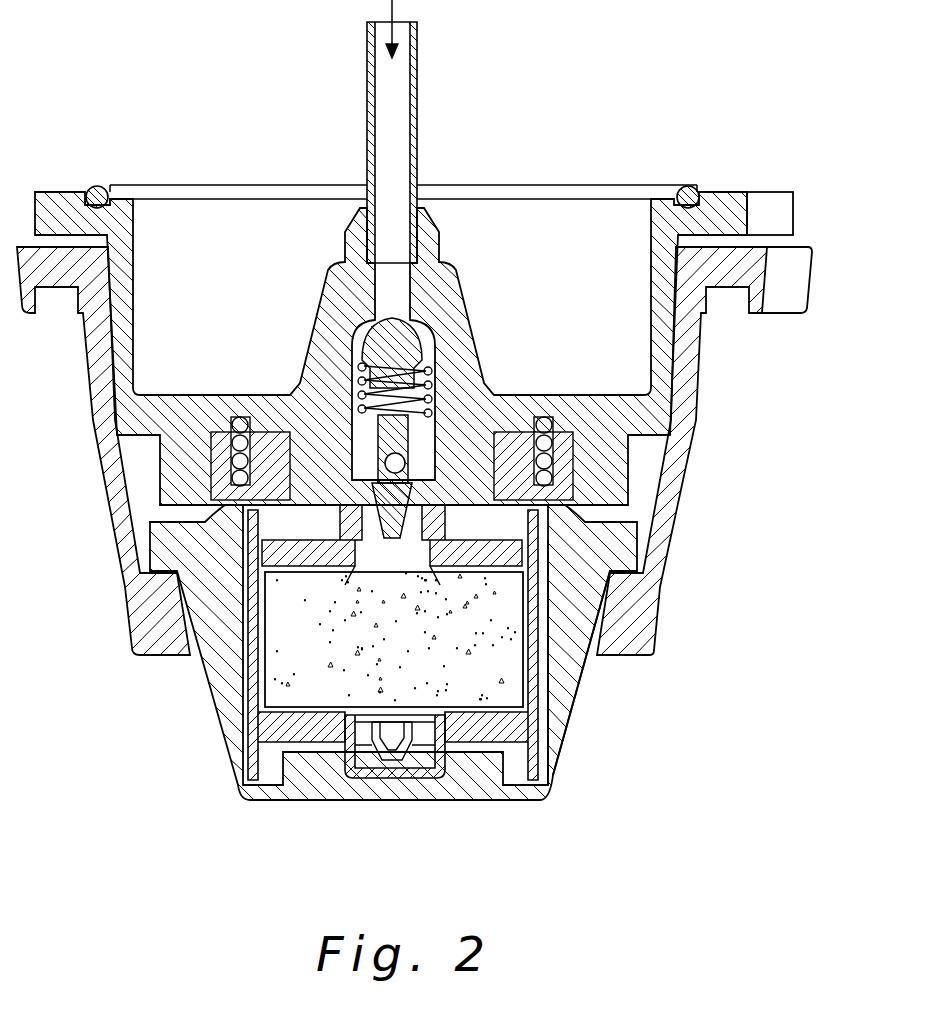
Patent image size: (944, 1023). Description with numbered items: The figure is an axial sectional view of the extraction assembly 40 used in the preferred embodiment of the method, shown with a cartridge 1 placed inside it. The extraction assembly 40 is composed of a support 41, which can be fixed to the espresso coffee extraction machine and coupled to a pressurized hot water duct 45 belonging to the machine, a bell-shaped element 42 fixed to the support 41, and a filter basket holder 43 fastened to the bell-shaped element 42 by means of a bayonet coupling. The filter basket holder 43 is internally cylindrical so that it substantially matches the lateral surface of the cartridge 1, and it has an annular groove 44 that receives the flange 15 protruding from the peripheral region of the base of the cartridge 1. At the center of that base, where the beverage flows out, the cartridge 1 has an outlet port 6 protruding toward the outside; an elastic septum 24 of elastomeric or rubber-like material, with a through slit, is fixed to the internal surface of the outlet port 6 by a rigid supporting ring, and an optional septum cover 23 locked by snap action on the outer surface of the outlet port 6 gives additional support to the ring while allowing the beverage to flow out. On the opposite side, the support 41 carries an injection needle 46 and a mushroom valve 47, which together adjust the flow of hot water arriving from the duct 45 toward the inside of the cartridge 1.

The cartridge 1 is at (268, 683).
The outlet port 6 is at (350, 752).
The flange 15 is at (535, 770).
The septum cover 23 is at (445, 773).
The septum 24 is at (390, 777).
The extraction assembly 40 is at (421, 433).
The support 41 is at (712, 208).
The bell-shaped element 42 is at (690, 398).
The filter basket holder 43 is at (583, 695).
The annular groove 44 is at (547, 748).
The pressurized hot water duct 45 is at (420, 108).
The injection needle 46 is at (432, 420).
The mushroom valve 47 is at (405, 328).